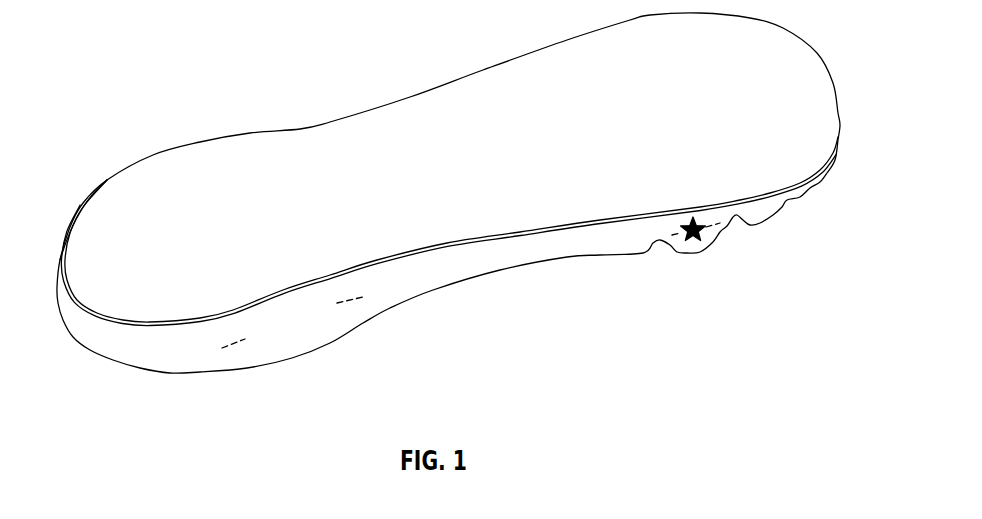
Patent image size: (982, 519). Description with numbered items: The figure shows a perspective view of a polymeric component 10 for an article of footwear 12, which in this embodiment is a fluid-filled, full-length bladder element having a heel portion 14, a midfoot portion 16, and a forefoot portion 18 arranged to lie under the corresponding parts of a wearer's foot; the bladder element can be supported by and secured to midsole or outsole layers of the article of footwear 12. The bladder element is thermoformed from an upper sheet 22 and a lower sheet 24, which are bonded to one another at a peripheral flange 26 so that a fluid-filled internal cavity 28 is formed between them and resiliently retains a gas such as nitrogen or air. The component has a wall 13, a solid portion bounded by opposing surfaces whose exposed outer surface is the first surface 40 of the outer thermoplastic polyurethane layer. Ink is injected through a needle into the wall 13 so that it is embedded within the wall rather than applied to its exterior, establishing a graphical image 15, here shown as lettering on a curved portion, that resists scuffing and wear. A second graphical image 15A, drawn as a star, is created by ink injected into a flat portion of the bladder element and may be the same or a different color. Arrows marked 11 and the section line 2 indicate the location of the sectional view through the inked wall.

The section line 2- 2 is at (217, 347).
The polymeric component 10 is at (488, 78).
The indicia 11 is at (667, 240).
The article of footwear 12 is at (268, 90).
The wall 13 is at (218, 357).
The heel portion 14 is at (120, 192).
The graphical image 15 is at (292, 358).
The graphical image 15A is at (725, 233).
The midfoot portion 16 is at (452, 160).
The forefoot portion 18 is at (755, 30).
The upper sheet 22 is at (793, 48).
The lower sheet 24 is at (583, 257).
The peripheral flange 26 is at (447, 243).
The fluid-filled internal cavity 28 is at (165, 170).
The first surface 40 is at (382, 295).